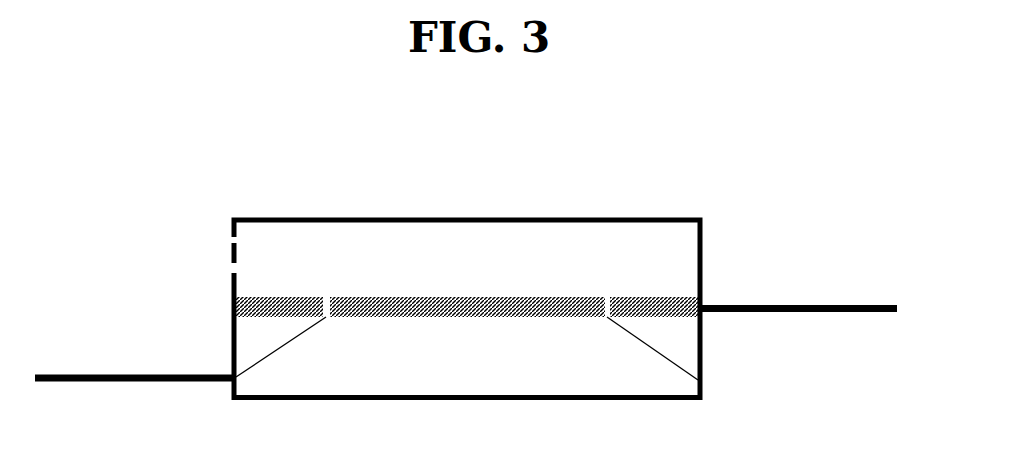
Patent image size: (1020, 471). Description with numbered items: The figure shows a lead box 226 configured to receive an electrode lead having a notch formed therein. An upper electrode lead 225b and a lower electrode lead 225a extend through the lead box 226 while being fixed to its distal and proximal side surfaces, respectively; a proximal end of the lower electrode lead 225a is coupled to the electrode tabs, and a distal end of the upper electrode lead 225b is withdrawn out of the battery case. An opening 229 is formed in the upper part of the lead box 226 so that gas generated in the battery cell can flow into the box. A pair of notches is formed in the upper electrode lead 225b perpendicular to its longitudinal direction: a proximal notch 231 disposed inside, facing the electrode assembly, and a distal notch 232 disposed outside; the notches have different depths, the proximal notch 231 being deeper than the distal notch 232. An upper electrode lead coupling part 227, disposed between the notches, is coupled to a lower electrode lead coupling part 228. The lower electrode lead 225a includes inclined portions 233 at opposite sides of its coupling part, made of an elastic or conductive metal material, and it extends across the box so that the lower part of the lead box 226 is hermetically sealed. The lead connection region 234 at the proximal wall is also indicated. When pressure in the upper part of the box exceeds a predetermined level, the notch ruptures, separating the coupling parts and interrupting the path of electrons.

The lower electrode lead 225a is at (100, 373).
The upper electrode lead 225b is at (888, 304).
The lead box 226 is at (704, 355).
The upper electrode lead coupling part 227 is at (471, 296).
The lower electrode lead coupling part 228 is at (392, 319).
The opening 229 is at (229, 245).
The proximal notch 231 is at (329, 297).
The distal notch 232 is at (602, 296).
The inclined portion 233 is at (293, 343).
The lead connection 234 is at (231, 373).